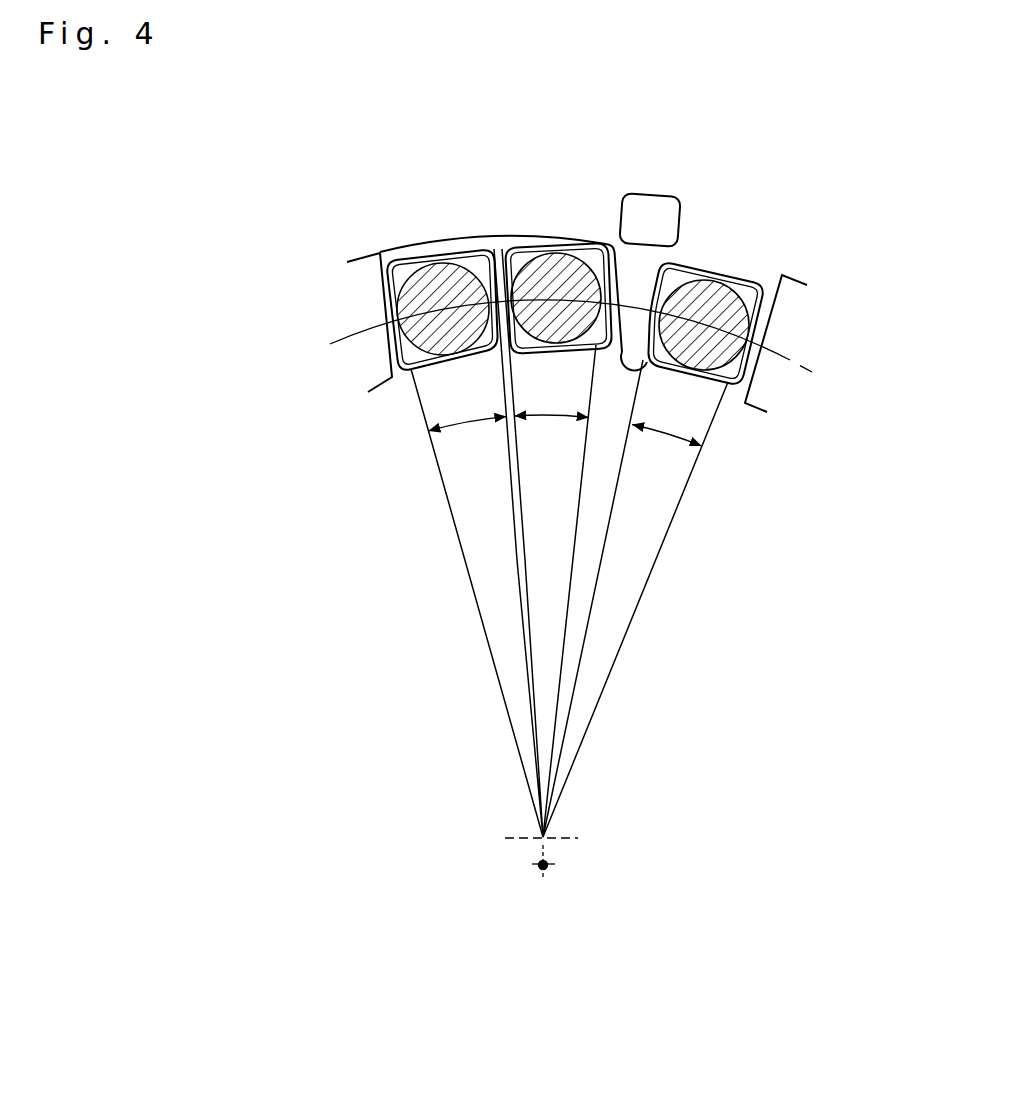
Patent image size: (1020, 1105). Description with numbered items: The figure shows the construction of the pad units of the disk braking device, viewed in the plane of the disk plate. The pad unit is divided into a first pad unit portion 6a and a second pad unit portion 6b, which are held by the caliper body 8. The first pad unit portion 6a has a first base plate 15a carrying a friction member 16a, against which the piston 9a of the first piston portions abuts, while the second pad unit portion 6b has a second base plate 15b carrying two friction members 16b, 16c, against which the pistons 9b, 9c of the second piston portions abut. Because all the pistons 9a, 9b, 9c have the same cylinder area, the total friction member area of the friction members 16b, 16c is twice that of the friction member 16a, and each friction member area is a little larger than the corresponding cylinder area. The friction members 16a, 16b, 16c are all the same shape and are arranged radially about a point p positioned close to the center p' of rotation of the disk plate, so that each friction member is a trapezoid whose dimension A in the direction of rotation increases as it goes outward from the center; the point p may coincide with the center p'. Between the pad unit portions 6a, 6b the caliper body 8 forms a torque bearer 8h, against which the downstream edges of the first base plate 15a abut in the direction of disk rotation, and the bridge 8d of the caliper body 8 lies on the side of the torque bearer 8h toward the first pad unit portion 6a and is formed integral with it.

The caliper body 8 is at (346, 249).
The bridge 8d is at (655, 193).
The torque bearer 8h is at (613, 363).
The first pad unit portion 6a is at (724, 260).
The second pad unit portion 6b is at (489, 232).
The piston 9a is at (752, 283).
The piston 9b is at (515, 248).
The piston 9c is at (400, 262).
The first base plate 15a is at (747, 363).
The second base plate 15b is at (392, 372).
The friction member 16a is at (710, 366).
The friction member 16b is at (583, 250).
The friction member 16c is at (465, 262).
The dimension in the direction of rotation A is at (547, 420).
The radially central point p is at (578, 877).
The center of rotation of the disk plate p' is at (493, 896).